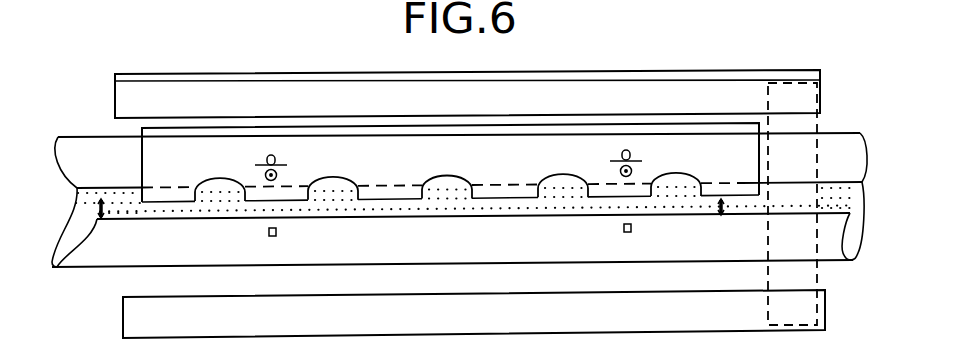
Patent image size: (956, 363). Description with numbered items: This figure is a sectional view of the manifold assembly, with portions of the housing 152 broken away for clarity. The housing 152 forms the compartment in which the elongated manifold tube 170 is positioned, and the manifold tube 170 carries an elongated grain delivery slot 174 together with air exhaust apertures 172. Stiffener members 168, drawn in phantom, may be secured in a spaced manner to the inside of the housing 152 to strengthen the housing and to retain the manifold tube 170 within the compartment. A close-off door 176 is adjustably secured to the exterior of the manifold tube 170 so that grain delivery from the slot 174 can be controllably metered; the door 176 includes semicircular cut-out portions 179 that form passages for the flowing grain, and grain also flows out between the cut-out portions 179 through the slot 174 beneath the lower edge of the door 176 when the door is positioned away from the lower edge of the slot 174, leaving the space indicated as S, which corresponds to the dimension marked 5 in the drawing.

The housing 152 is at (215, 74).
The stiffener members 168 is at (786, 101).
The manifold tube 170 is at (73, 148).
The air exhaust apertures 172 is at (146, 209).
The grain delivery slot 174 is at (104, 191).
The close-off door 176 is at (713, 182).
The semicircular cut-out portions 179 is at (352, 186).
The layer thickness 5 is at (728, 208).